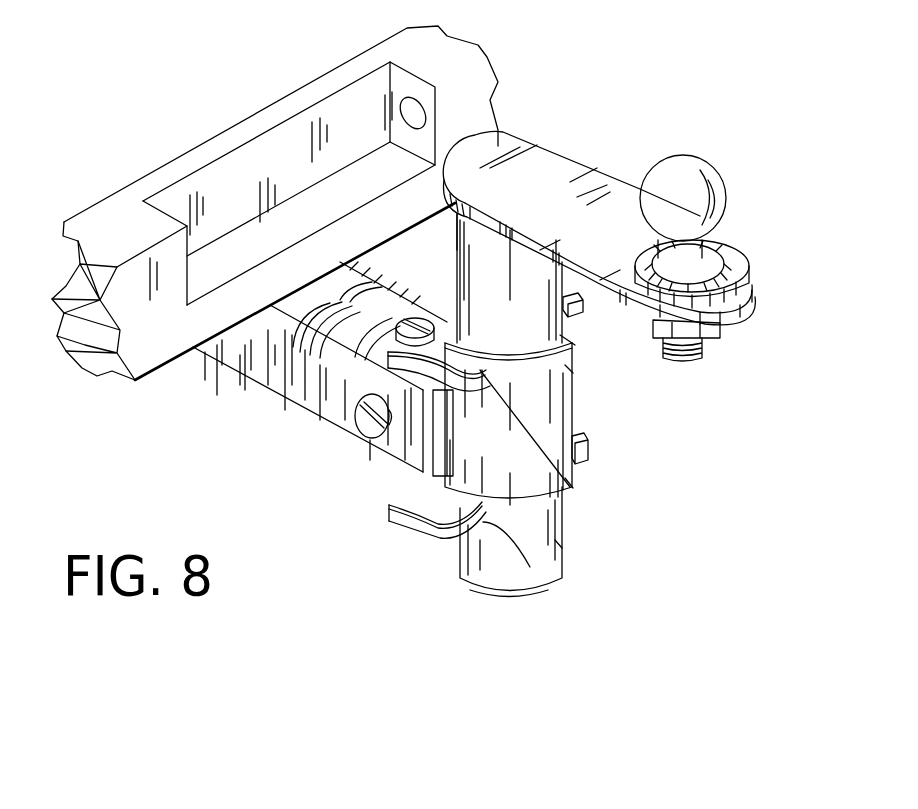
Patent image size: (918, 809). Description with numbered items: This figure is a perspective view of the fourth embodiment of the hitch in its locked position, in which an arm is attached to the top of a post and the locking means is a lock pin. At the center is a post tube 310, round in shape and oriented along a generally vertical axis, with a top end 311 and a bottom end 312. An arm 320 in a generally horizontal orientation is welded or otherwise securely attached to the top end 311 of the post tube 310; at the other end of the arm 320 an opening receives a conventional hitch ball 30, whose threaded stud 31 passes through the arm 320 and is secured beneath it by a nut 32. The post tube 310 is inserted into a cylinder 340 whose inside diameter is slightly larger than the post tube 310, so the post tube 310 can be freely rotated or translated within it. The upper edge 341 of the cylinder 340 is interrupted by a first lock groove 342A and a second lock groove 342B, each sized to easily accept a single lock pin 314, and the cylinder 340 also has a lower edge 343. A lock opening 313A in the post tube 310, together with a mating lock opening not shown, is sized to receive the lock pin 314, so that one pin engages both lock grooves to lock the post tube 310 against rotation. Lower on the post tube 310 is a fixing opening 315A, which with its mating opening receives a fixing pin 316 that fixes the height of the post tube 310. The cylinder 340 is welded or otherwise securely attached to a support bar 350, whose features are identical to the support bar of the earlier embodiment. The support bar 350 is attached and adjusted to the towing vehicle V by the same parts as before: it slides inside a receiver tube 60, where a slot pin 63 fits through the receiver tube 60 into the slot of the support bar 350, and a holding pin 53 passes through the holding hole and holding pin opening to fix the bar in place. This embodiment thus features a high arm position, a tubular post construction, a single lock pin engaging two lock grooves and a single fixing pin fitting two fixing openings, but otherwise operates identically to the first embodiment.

The towing vehicle V is at (450, 36).
The top end 311 is at (462, 216).
The arm 320 is at (605, 165).
The hitch ball 30 is at (703, 158).
The slot pin 63 is at (432, 315).
The receiver tube 60 is at (250, 380).
The holding pin 53 is at (355, 438).
The support bar 350 is at (427, 470).
The fixing pin 316 is at (410, 528).
The bottom end 312 is at (460, 588).
The fixing opening 315A is at (505, 545).
The lock pin 314 is at (572, 312).
The second lock groove 342B is at (566, 340).
The upper edge 341 is at (573, 373).
The cylinder 340 is at (573, 402).
The lock opening 313A is at (588, 446).
The first lock groove 342A is at (573, 485).
The post tube 310 is at (563, 512).
The lower edge 343 is at (562, 545).
The nut 32 is at (720, 328).
The threaded stud 31 is at (702, 357).